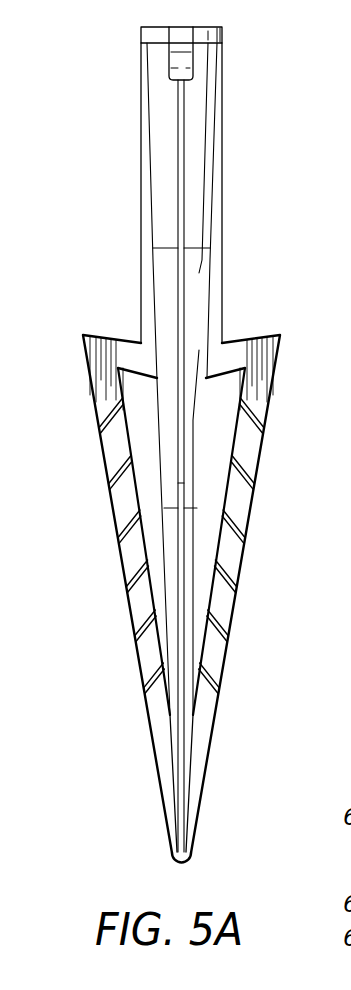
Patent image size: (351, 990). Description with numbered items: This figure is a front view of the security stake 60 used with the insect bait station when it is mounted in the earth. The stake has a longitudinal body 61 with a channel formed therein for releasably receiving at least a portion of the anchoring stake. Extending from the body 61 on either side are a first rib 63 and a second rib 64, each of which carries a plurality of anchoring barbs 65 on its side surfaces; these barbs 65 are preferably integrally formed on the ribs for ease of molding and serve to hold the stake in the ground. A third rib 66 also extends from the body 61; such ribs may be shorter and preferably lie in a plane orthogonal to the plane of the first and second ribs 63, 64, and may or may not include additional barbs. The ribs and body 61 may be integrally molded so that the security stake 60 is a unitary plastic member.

The security stake 60 is at (247, 257).
The longitudinal body 61 is at (198, 222).
The first rib 63 is at (265, 377).
The second rib 64 is at (105, 380).
The anchoring barbs 65 is at (118, 458).
The third rib 66 is at (185, 312).